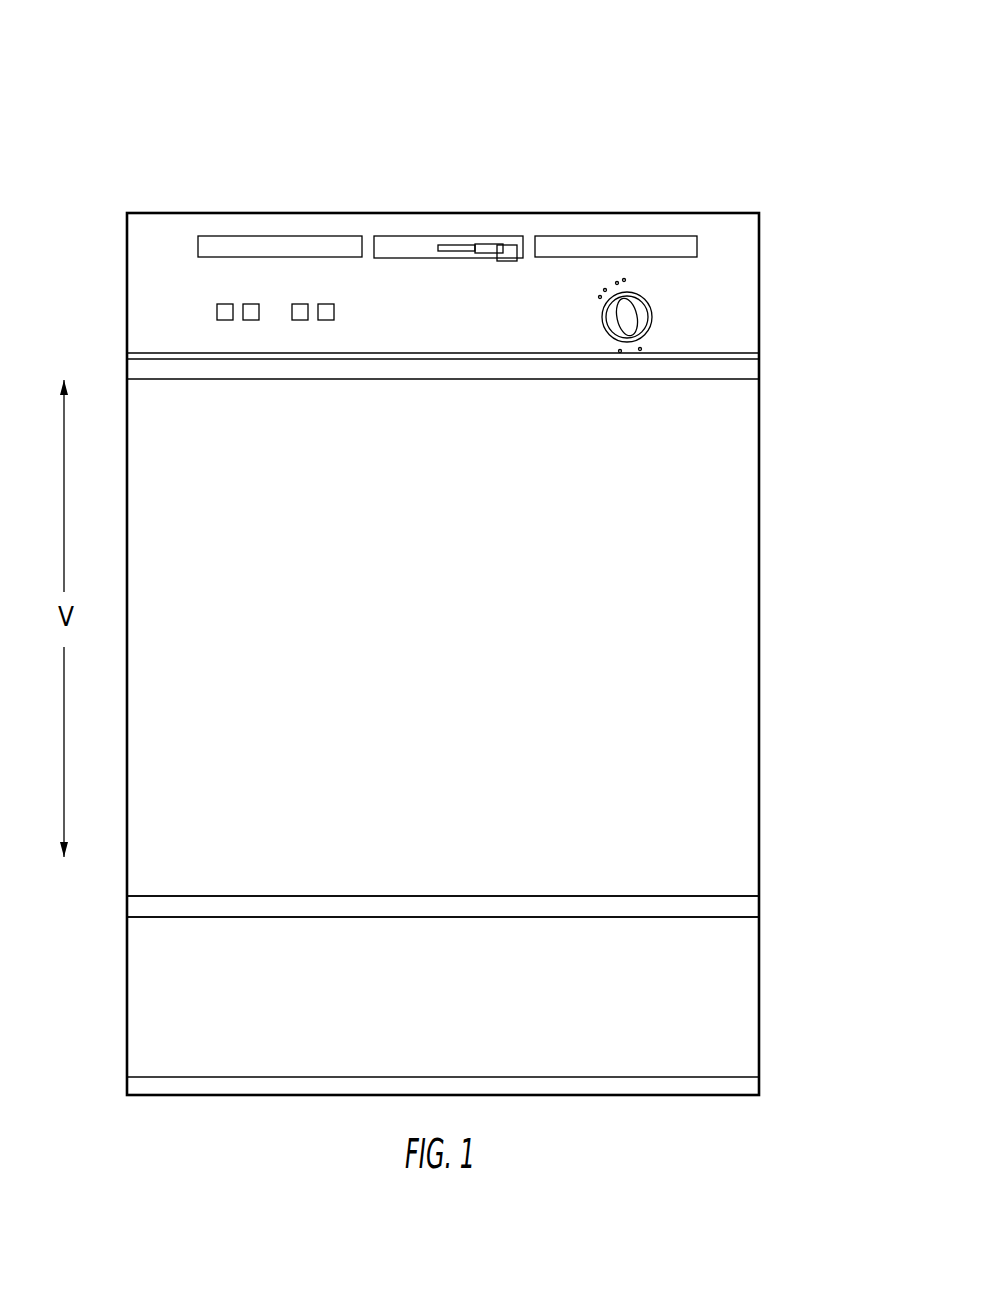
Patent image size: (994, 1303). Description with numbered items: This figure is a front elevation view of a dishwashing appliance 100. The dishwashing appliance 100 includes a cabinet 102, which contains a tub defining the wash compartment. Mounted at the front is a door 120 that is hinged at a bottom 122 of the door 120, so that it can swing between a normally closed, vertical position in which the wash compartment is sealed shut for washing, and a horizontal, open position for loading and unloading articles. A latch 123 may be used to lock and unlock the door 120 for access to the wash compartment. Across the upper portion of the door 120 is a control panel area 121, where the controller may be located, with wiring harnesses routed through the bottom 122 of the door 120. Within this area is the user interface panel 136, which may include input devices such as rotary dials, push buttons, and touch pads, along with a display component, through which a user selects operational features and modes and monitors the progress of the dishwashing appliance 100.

The dishwashing appliance 100 is at (672, 152).
The cabinet 102 is at (782, 983).
The door 120 is at (714, 629).
The control panel area 121 is at (492, 230).
The bottom 122 is at (785, 876).
The latch 123 is at (503, 252).
The user interface panel 136 is at (301, 305).